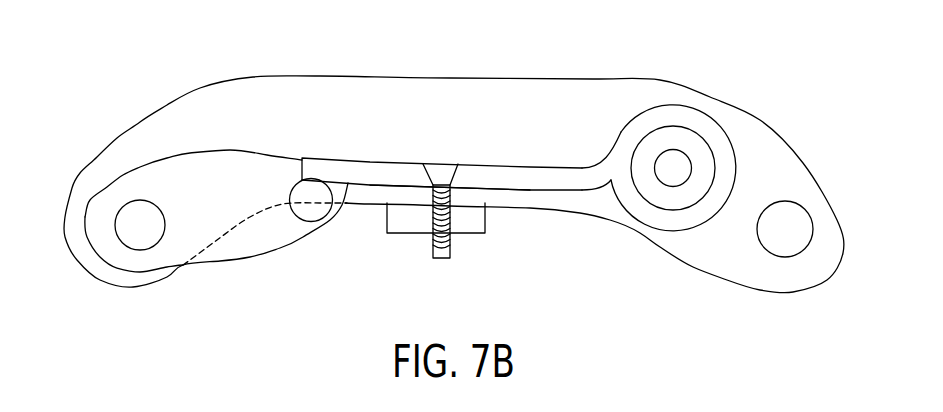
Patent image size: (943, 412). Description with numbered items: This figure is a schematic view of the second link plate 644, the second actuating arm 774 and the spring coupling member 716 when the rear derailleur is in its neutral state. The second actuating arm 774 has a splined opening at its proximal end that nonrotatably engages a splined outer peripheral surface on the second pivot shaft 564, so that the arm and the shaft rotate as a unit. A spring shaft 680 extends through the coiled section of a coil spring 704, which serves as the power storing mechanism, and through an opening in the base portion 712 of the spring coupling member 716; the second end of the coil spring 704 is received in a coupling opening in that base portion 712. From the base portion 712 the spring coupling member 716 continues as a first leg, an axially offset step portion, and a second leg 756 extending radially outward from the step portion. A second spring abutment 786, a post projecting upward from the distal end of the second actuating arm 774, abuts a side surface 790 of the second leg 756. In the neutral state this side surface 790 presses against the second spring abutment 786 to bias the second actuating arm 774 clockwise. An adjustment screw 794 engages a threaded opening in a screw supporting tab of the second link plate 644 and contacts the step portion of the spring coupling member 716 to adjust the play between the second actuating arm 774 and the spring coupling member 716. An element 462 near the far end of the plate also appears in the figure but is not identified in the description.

The second link plate 644 is at (553, 78).
The second actuating arm 774 is at (170, 175).
The second pivot shaft 564 is at (127, 223).
The second leg 756 is at (352, 167).
The spring coupling member 716 is at (487, 155).
The coil spring 704 is at (740, 130).
The base portion 712 is at (728, 168).
The spring shaft 680 is at (673, 158).
The hole 462 is at (800, 232).
The second spring abutment 786 is at (310, 212).
The side surface 790 is at (375, 183).
The adjustment screw 794 is at (443, 250).